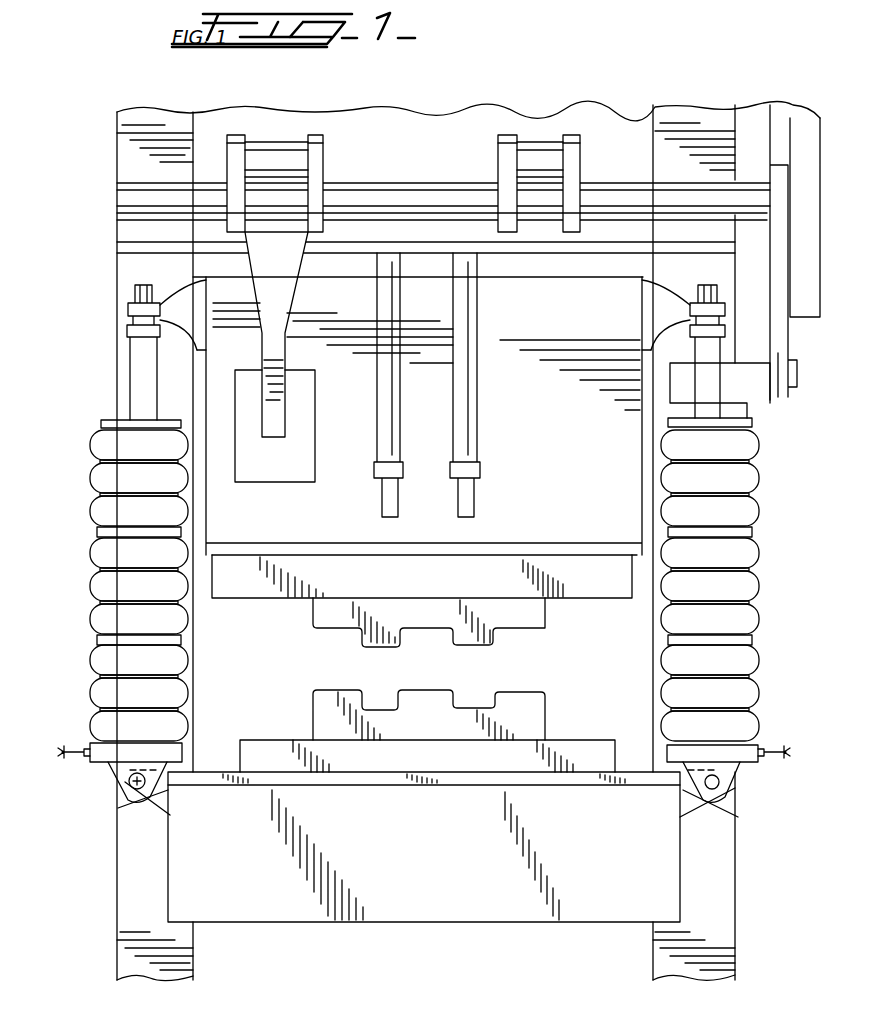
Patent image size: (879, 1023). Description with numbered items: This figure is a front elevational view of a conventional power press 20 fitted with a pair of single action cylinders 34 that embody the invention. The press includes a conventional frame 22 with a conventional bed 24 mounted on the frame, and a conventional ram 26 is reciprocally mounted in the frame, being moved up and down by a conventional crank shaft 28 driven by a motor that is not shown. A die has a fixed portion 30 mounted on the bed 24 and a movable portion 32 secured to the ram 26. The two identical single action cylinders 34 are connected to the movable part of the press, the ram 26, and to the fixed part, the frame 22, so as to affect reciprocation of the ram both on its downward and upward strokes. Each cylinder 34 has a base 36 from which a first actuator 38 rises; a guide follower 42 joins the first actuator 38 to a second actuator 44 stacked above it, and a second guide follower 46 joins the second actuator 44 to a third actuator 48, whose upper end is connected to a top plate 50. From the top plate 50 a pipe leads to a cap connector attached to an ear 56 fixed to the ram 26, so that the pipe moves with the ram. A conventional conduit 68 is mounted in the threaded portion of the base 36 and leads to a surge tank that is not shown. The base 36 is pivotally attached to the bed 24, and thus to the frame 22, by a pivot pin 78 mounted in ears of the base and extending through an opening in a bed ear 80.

The power press 20 is at (616, 102).
The frame 22 is at (722, 884).
The bed 24 is at (413, 893).
The ram 26 is at (617, 433).
The crank shaft 28 is at (412, 205).
The fixed portion of the die 30 is at (527, 708).
The movable portion of the die 32 is at (528, 615).
The single action cylinder 34 is at (92, 512).
The base 36 is at (92, 766).
The first actuator 38 is at (92, 693).
The guide follower 42 is at (92, 637).
The second actuator 44 is at (92, 582).
The second guide follower 46 is at (95, 532).
The third actuator 48 is at (92, 478).
The top plate 50 is at (100, 424).
The ear 56 is at (187, 300).
The conduit 68 is at (72, 745).
The pivot pin 78 is at (130, 783).
The bed ear 80 is at (150, 800).